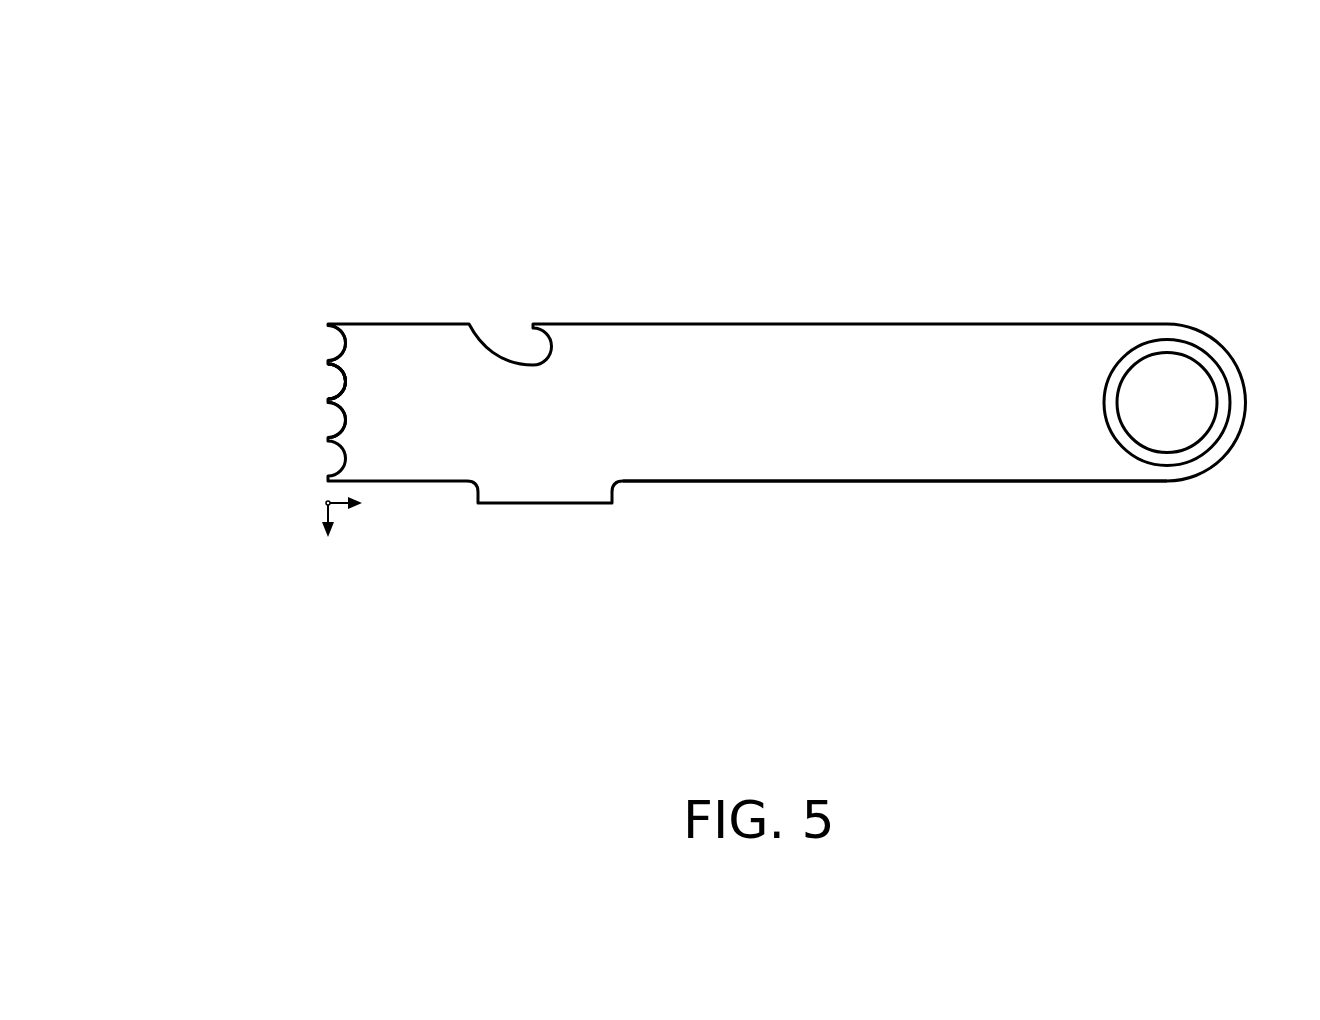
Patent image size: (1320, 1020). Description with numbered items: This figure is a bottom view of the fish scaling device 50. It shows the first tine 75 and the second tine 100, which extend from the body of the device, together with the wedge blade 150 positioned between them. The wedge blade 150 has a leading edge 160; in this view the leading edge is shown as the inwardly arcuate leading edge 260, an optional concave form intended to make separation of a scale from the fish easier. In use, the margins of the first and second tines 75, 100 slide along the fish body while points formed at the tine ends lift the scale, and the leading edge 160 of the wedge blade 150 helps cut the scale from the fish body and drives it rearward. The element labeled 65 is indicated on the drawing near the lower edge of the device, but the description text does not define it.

The fish scaling device 50 is at (937, 116).
The handle 65 is at (775, 481).
The first tine 75 is at (330, 402).
The second tine 100 is at (330, 364).
The wedge blade 150 is at (333, 390).
The leading edge 160 is at (267, 393).
The inwardly arcuate leading edge 260 is at (289, 393).